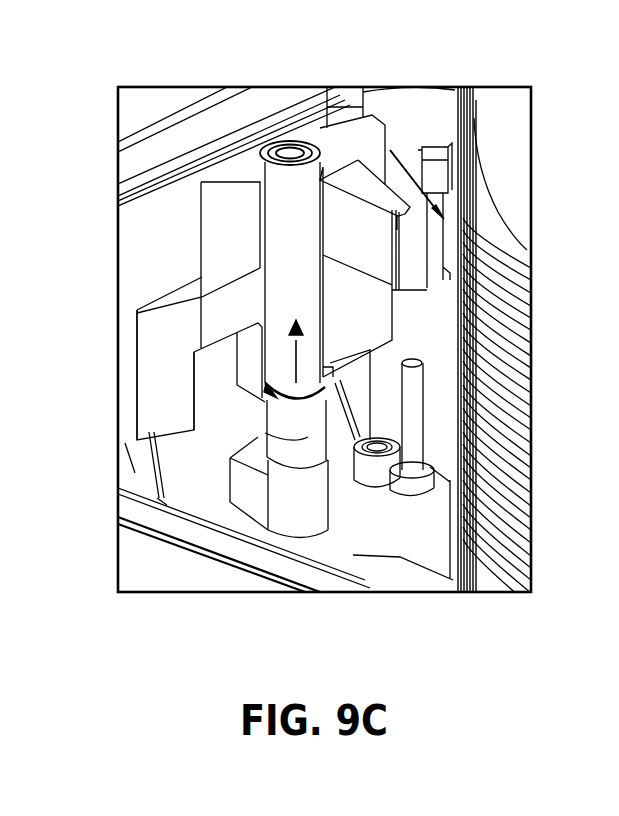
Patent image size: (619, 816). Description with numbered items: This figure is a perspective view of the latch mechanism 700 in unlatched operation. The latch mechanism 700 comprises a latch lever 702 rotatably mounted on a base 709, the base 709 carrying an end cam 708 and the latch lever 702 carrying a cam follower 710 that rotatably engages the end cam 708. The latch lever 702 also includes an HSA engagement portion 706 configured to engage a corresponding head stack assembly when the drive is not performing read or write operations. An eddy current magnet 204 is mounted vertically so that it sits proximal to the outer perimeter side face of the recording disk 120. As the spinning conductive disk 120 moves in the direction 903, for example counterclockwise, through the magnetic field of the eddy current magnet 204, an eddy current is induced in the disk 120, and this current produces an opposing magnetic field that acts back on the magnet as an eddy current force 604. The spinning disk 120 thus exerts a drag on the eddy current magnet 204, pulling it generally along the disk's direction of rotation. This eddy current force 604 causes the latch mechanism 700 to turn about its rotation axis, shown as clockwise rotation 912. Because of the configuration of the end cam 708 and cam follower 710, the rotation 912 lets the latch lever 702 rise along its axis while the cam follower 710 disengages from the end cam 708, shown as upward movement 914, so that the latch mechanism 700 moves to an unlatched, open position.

The disk 120 is at (521, 116).
The eddy current magnet 204 is at (477, 187).
The eddy current force 604 is at (445, 153).
The latch mechanism 700 is at (283, 140).
The latch lever 702 is at (378, 323).
The HSA engagement portion 706 is at (177, 422).
The end cam 708 is at (258, 470).
The base 709 is at (300, 462).
The cam follower 710 is at (308, 428).
The direction 903 is at (500, 242).
The clockwise rotation 912 is at (330, 375).
The upward movement 914 is at (268, 345).